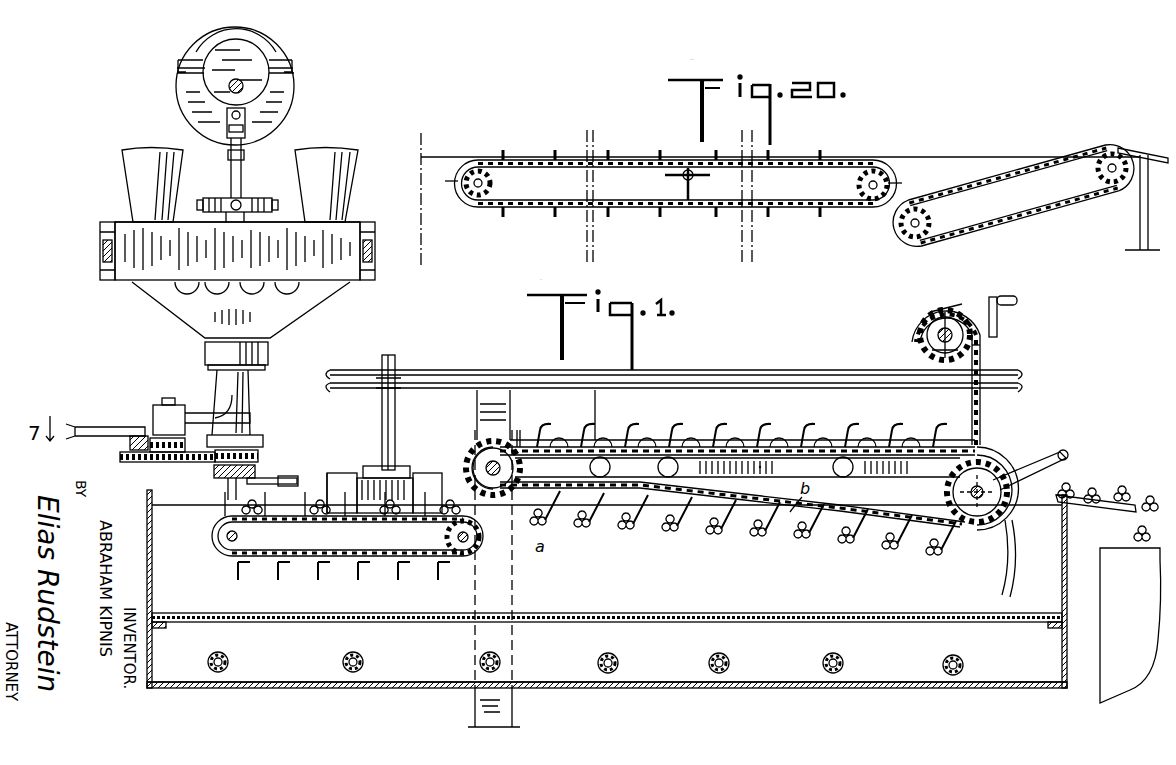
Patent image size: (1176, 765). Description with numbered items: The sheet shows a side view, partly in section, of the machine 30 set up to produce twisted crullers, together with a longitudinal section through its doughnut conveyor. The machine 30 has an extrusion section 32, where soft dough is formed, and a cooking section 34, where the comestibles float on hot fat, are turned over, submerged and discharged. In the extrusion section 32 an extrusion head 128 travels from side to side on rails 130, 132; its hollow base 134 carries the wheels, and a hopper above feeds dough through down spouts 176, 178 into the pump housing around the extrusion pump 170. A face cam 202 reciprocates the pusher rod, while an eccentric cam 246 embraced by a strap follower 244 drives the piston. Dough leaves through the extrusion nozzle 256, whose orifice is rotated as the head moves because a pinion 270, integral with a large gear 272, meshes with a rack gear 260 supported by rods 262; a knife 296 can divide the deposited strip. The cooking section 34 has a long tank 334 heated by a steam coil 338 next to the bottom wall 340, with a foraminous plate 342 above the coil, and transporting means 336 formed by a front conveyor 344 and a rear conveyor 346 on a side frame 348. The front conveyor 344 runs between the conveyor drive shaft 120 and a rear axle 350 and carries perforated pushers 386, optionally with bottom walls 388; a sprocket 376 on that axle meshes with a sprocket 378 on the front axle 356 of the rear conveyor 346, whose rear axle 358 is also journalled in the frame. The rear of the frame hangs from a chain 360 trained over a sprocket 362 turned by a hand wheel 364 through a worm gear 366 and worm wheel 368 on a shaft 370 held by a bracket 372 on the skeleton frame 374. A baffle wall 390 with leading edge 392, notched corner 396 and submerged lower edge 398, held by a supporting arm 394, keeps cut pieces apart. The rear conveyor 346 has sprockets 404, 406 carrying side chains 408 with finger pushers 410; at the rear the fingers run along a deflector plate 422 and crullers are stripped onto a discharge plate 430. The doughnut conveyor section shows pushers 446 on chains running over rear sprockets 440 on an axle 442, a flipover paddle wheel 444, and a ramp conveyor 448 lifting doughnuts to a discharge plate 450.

In FIG. 1, the machine 30 is at (120, 354).
In FIG. 1, the extrusion section 32 is at (85, 236).
In FIG. 1, the cooking section 34 is at (358, 702).
In FIG. 1, the conveyor drive shaft 120 is at (226, 540).
In FIG. 1, the extrusion head 128 is at (312, 325).
In FIG. 1, the rail 130 is at (100, 252).
In FIG. 1, the rail 132 is at (375, 257).
In FIG. 1, the hollow base 134 is at (355, 222).
In FIG. 1, the extrusion pump 170 is at (282, 180).
In FIG. 1, the down spout 176 is at (125, 178).
In FIG. 1, the down spout 178 is at (356, 175).
In FIG. 1, the face cam 202 is at (292, 98).
In FIG. 1, the strap follower 244 is at (268, 45).
In FIG. 1, the eccentric cam 246 is at (208, 60).
In FIG. 1, the extrusion nozzle 256 is at (250, 384).
In FIG. 1, the rack gear 260 is at (132, 447).
In FIG. 1, the rod 262 is at (107, 425).
In FIG. 1, the pinion 270 is at (188, 404).
In FIG. 1, the large gear 272 is at (150, 463).
In FIG. 1, the knife 296 is at (282, 475).
In FIG. 1, the tank 334 is at (802, 690).
In FIG. 1, the transporting means 336 is at (510, 360).
In FIG. 1, the steam coil 338 is at (955, 676).
In FIG. 1, the bottom wall 340 is at (896, 690).
In FIG. 1, the foraminous plate 342 is at (556, 613).
In FIG. 1, the front conveyor 344 is at (236, 571).
In FIG. 1, the rear conveyor 346 is at (1028, 444).
In FIG. 1, the side frame 348 is at (884, 478).
In FIG. 1, the rear axle 350 is at (458, 560).
In FIG. 1, the front axle 356 is at (478, 445).
In FIG. 1, the rear axle 358 is at (990, 462).
In FIG. 1, the chain 360 is at (982, 405).
In FIG. 1, the sprocket 362 is at (924, 344).
In FIG. 1, the hand wheel 364 is at (997, 318).
In FIG. 1, the worm gear 366 is at (965, 300).
In FIG. 1, the worm wheel 368 is at (935, 323).
In FIG. 1, the shaft 370 is at (982, 346).
In FIG. 1, the bracket 372 is at (936, 367).
In FIG. 1, the skeleton frame 374 is at (740, 368).
In FIG. 1, the sprocket 376 is at (514, 565).
In FIG. 1, the sprocket 378 is at (518, 440).
In FIG. 1, the pusher 386 is at (350, 580).
In FIG. 1, the bottom wall 388 is at (348, 556).
In FIG. 1, the baffle wall 390 is at (340, 473).
In FIG. 1, the leading edge 392 is at (327, 480).
In FIG. 1, the supporting arm 394 is at (380, 413).
In FIG. 1, the leading lower corner 396 is at (366, 467).
In FIG. 1, the lower edge 398 is at (430, 473).
In FIG. 1, the sprocket 404 is at (560, 447).
In FIG. 1, the sprocket 406 is at (946, 445).
In FIG. 1, the side chain 408 is at (778, 445).
In FIG. 1, the pusher 410 is at (876, 445).
In FIG. 1, the deflector plate 422 is at (1030, 555).
In FIG. 1, the discharge plate 430 is at (1100, 507).
In FIG. 20, the sprocket 440 is at (882, 170).
In FIG. 20, the axle 442 is at (878, 184).
In FIG. 20, the flipover paddle wheel 444 is at (688, 168).
In FIG. 20, the pusher 446 is at (503, 158).
In FIG. 20, the ramp conveyor 448 is at (1064, 160).
In FIG. 20, the discharge plate 450 is at (1150, 148).